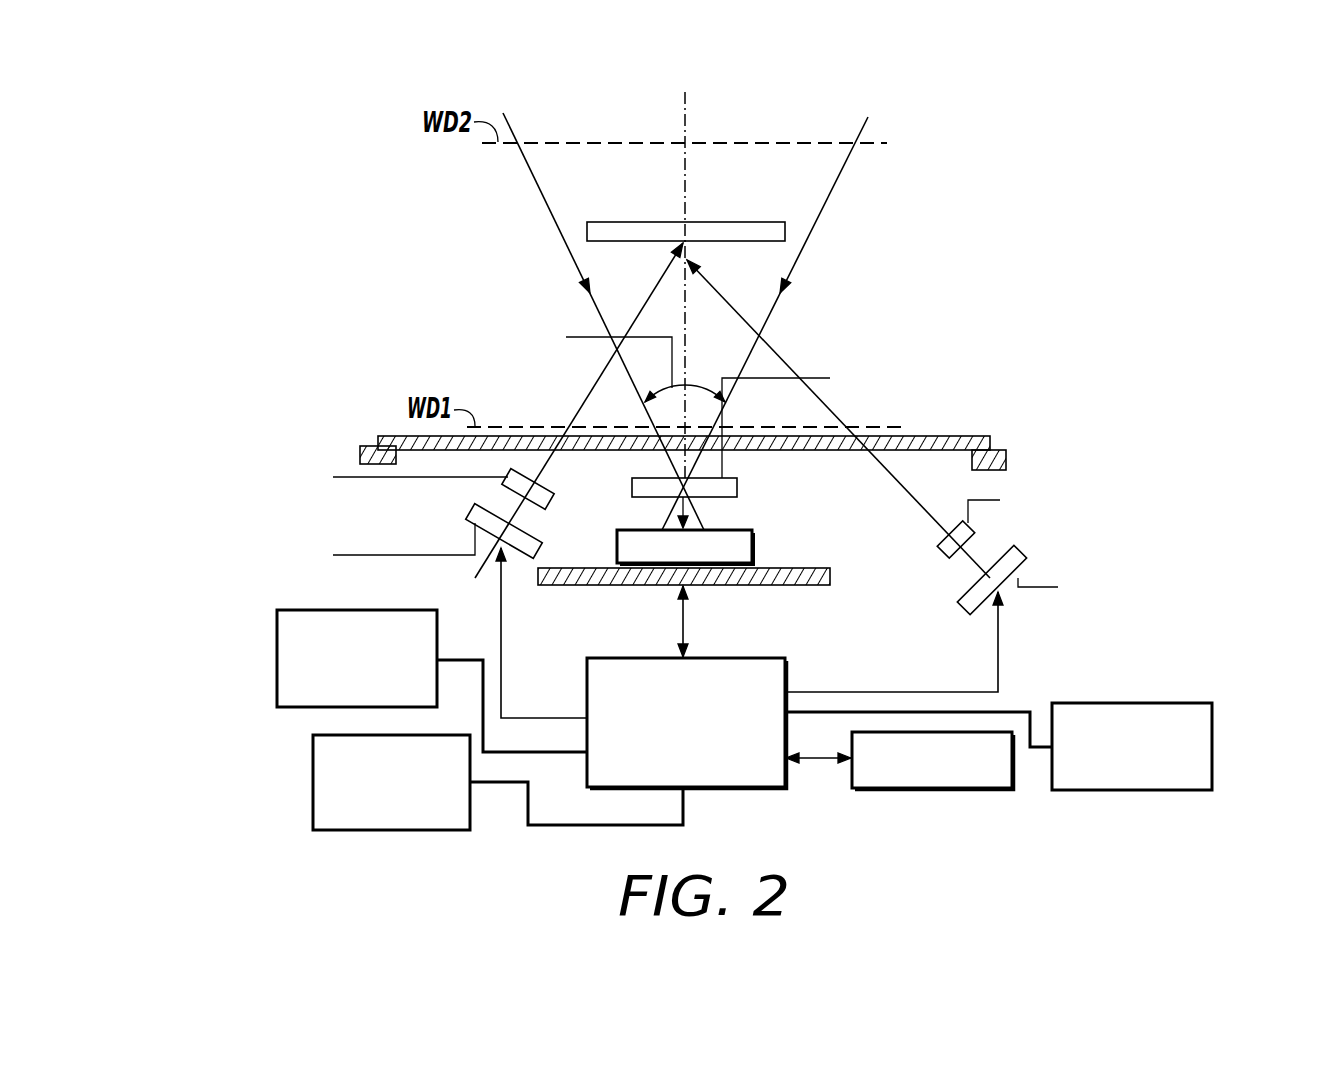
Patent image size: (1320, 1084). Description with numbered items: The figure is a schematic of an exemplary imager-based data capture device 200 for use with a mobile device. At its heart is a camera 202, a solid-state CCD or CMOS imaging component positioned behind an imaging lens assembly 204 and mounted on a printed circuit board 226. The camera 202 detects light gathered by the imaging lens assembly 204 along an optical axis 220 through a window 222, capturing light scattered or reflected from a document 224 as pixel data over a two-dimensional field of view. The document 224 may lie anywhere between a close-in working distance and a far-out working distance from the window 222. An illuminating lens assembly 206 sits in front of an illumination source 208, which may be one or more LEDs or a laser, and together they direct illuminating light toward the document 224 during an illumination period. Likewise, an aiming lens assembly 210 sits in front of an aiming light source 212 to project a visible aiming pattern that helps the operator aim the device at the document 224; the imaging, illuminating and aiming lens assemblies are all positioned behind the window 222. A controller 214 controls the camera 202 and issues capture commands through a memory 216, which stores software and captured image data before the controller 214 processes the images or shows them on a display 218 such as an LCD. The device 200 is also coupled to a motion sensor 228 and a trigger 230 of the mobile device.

The imager-based data capture device 200 is at (853, 296).
The camera 202 is at (752, 549).
The imaging lens assembly 204 is at (737, 488).
The illuminating lens assembly 206 is at (1112, 476).
The illumination source 208 is at (1145, 640).
The aiming lens assembly 210 is at (243, 452).
The aiming light source 212 is at (246, 600).
The controller 214 is at (587, 691).
The memory 216 is at (932, 790).
The display 218 is at (313, 794).
The optical axis 220 is at (692, 120).
The window 222 is at (395, 434).
The document 224 is at (735, 218).
The printed circuit board 226 is at (753, 588).
The motion sensor 228 is at (277, 673).
The trigger 230 is at (1132, 790).